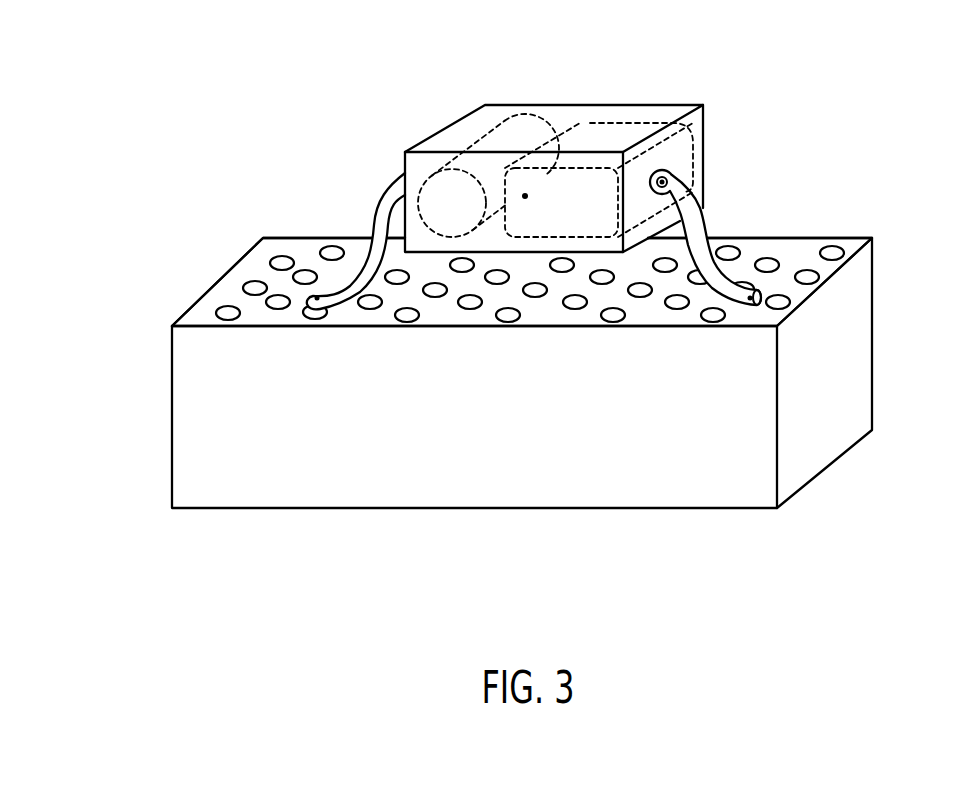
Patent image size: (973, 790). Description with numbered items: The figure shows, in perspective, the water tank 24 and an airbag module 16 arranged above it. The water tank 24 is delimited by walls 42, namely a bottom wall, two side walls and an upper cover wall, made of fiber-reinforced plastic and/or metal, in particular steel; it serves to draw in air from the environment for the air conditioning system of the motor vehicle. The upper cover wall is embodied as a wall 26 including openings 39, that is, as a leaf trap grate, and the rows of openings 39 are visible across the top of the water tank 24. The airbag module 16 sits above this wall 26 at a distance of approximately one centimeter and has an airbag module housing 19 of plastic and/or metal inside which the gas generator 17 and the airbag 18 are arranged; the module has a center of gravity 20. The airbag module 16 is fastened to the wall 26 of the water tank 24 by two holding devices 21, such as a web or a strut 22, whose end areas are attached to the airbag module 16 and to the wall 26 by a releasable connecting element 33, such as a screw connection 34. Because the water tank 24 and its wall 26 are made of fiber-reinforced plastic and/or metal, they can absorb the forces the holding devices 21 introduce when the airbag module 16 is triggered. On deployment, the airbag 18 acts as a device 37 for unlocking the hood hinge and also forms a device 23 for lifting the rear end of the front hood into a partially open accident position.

The airbag module 16 is at (590, 151).
The gas generator 17 is at (494, 128).
The airbag 18 is at (640, 144).
The airbag module housing 19 is at (590, 151).
The center of gravity 20 is at (526, 196).
The holding device 21 is at (565, 329).
The strut 22 is at (565, 329).
The device for lifting the front hood 23 is at (640, 144).
The water tank 24 is at (539, 349).
The wall including openings 26 is at (521, 245).
The releasable connecting element 33 is at (557, 329).
The screw connection 34 is at (665, 177).
The device for unlocking the hinge 37 is at (648, 105).
The openings 39 is at (283, 256).
The wall 42 is at (260, 253).